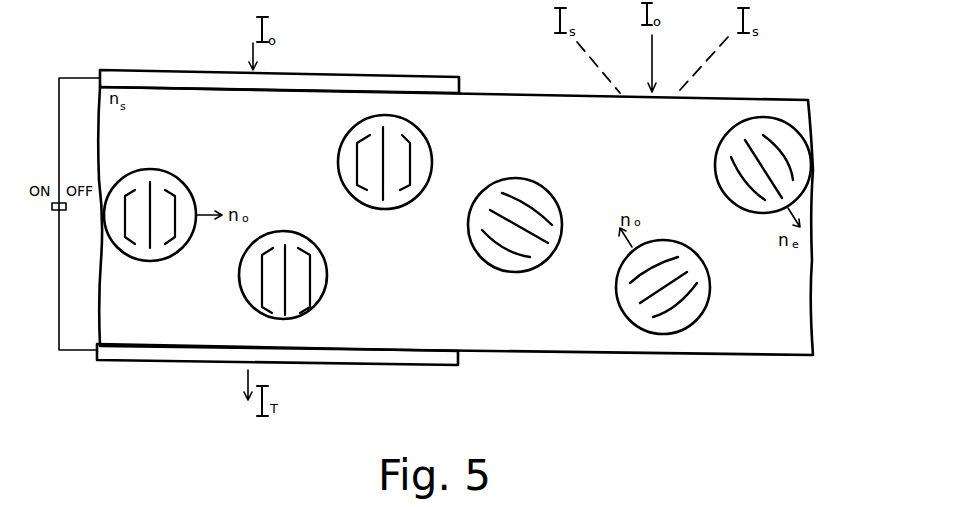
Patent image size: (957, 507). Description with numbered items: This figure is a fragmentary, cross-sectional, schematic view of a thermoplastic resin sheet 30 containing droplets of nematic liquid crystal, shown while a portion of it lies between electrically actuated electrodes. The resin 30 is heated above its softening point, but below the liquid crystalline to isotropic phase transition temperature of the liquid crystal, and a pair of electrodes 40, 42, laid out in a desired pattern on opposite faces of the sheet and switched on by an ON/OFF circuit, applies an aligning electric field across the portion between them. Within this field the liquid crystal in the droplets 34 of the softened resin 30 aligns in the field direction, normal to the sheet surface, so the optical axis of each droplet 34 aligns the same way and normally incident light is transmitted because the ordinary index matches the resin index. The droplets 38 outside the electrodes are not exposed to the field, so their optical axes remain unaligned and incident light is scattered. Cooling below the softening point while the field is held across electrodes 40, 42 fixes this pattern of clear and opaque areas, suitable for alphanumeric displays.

The resin 30 is at (760, 100).
The droplets 34 is at (147, 262).
The droplets 38 is at (688, 330).
The electrode 40 is at (345, 77).
The electrode 42 is at (428, 365).